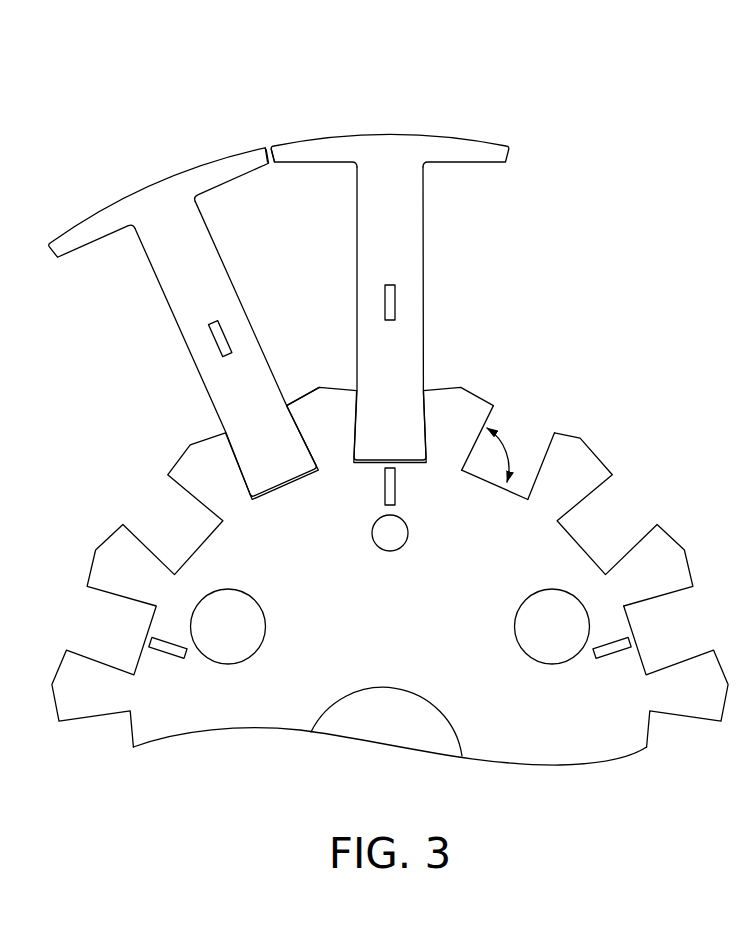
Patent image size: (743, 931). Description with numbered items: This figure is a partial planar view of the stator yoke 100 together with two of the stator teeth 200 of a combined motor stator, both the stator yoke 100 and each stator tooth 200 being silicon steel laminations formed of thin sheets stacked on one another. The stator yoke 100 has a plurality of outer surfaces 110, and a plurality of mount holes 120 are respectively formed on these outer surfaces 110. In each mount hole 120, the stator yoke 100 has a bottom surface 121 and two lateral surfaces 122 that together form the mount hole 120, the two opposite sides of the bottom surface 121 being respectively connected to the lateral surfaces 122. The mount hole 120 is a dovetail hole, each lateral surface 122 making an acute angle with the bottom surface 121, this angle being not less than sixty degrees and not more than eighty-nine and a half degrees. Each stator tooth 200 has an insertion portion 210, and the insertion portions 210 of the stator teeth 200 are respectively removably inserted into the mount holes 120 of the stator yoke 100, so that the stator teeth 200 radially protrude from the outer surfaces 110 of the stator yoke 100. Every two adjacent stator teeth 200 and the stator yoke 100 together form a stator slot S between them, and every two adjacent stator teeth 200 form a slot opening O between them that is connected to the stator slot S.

The stator yoke 100 is at (390, 586).
The outer surfaces 110 is at (578, 430).
The mount hole 120 is at (493, 458).
The bottom surface 121 is at (498, 484).
The lateral surfaces 122 is at (477, 442).
The stator tooth 200 is at (276, 264).
The insertion portion 210 is at (388, 428).
The slot opening O is at (268, 143).
The stator slot S is at (298, 223).